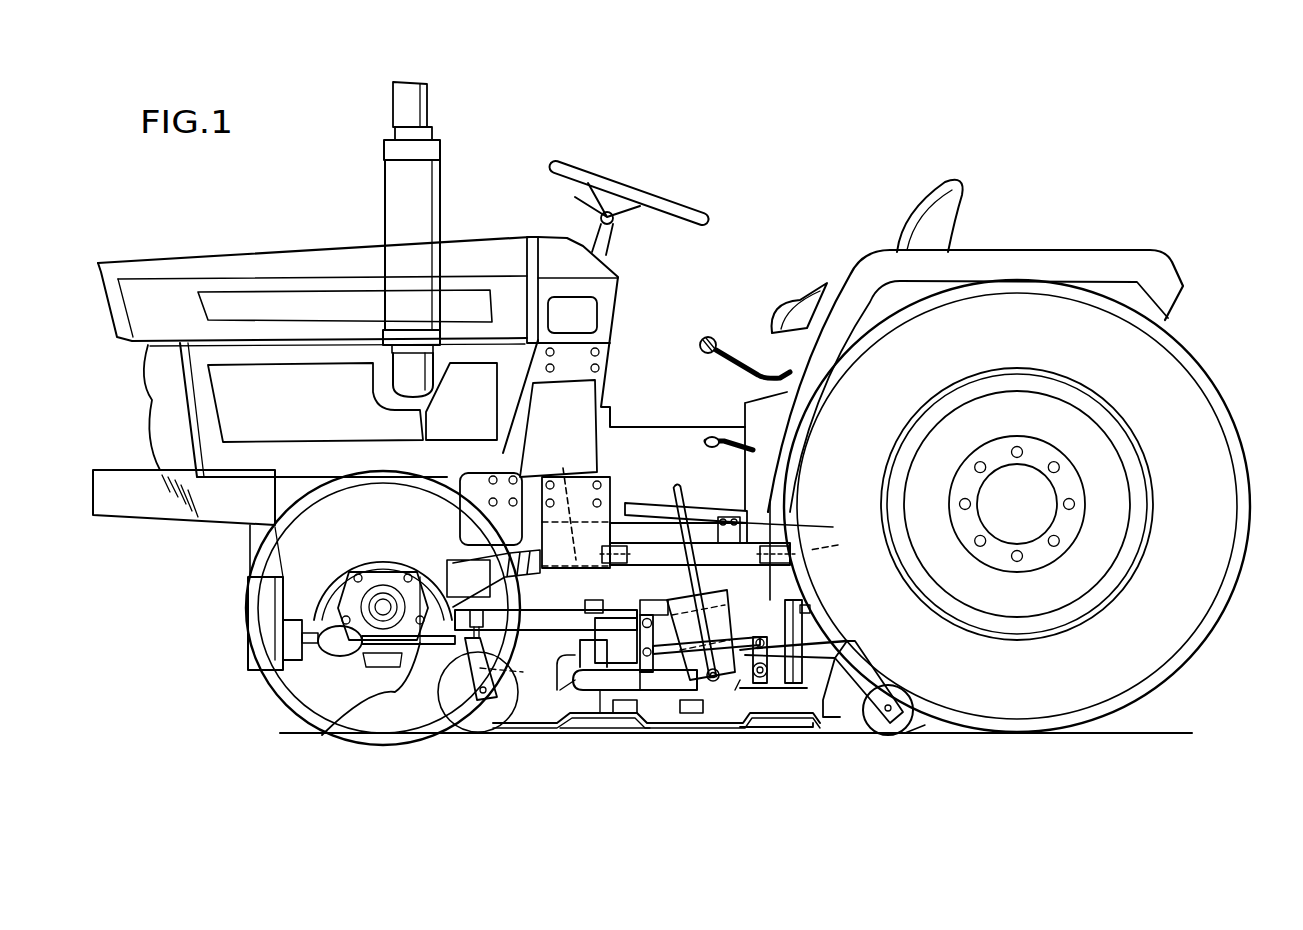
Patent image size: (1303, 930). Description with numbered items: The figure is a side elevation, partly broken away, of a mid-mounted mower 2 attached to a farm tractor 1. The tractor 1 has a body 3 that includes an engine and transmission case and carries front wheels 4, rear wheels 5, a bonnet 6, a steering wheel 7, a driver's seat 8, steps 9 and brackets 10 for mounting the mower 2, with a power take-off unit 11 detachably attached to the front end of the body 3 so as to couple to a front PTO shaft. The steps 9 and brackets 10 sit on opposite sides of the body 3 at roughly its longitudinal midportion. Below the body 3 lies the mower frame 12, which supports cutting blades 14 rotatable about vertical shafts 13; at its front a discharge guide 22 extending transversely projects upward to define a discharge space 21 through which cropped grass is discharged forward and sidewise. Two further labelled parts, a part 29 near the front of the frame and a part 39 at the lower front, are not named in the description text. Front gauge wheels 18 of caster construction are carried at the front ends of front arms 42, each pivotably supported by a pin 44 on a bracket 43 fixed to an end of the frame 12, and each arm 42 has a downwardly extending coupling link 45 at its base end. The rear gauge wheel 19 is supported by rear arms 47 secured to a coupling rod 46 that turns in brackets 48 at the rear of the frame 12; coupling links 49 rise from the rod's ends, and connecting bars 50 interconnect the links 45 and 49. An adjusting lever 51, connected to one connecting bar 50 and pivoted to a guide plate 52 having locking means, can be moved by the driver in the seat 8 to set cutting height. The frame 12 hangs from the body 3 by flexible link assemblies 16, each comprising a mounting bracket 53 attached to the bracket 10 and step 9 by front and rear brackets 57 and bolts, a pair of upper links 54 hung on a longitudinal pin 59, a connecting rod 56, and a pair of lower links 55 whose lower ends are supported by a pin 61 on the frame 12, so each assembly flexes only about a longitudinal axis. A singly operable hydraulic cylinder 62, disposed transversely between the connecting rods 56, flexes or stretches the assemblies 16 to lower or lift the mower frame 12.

The farm tractor 1 is at (500, 228).
The mid-mounted mower 2 is at (622, 748).
The tractor body 3 is at (676, 430).
The front wheels 4 is at (287, 555).
The rear wheels 5 is at (1228, 555).
The bonnet 6 is at (277, 255).
The steering wheel 7 is at (672, 210).
The driver's seat 8 is at (940, 200).
The steps 9 is at (714, 516).
The brackets 10 is at (597, 364).
The power take-off unit 11 is at (262, 608).
The mower frame 12 is at (733, 673).
The vertical shafts 13 is at (642, 713).
The cutting blades 14 is at (527, 728).
The flexible link assemblies 16 is at (792, 588).
The front gauge wheels 18 is at (468, 712).
The rear gauge wheel 19 is at (932, 722).
The discharge space 21 is at (577, 683).
The discharge guide 22 is at (575, 682).
The frame beam 29 is at (555, 643).
The guide member 39 is at (323, 735).
The front arm 42 is at (507, 620).
The bracket 43 is at (647, 665).
The pin 44 is at (651, 623).
The coupling link 45 is at (660, 673).
The coupling rod 46 is at (773, 657).
The rear arms 47 is at (850, 673).
The brackets 48 is at (767, 677).
The coupling links 49 is at (770, 673).
The connecting bars 50 is at (740, 647).
The adjusting lever 51 is at (695, 505).
The guide plate 52 is at (738, 682).
The mounting bracket 53 is at (642, 551).
The upper links 54 is at (618, 593).
The lower links 55 is at (597, 610).
The connecting rod 56 is at (663, 610).
The front and rear brackets 57 is at (610, 490).
The pin 59 is at (706, 498).
The pin 61 is at (597, 672).
The hydraulic cylinder 62 is at (745, 607).